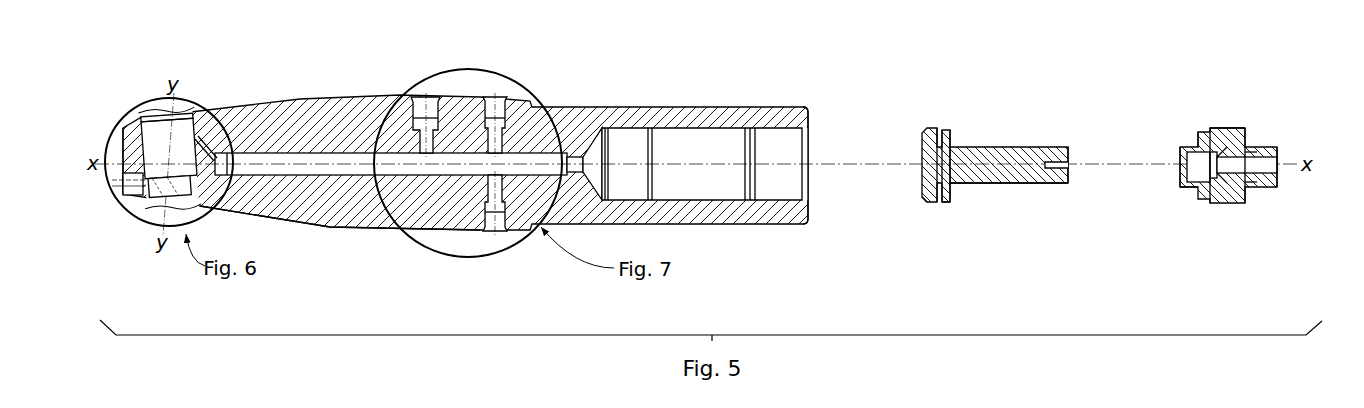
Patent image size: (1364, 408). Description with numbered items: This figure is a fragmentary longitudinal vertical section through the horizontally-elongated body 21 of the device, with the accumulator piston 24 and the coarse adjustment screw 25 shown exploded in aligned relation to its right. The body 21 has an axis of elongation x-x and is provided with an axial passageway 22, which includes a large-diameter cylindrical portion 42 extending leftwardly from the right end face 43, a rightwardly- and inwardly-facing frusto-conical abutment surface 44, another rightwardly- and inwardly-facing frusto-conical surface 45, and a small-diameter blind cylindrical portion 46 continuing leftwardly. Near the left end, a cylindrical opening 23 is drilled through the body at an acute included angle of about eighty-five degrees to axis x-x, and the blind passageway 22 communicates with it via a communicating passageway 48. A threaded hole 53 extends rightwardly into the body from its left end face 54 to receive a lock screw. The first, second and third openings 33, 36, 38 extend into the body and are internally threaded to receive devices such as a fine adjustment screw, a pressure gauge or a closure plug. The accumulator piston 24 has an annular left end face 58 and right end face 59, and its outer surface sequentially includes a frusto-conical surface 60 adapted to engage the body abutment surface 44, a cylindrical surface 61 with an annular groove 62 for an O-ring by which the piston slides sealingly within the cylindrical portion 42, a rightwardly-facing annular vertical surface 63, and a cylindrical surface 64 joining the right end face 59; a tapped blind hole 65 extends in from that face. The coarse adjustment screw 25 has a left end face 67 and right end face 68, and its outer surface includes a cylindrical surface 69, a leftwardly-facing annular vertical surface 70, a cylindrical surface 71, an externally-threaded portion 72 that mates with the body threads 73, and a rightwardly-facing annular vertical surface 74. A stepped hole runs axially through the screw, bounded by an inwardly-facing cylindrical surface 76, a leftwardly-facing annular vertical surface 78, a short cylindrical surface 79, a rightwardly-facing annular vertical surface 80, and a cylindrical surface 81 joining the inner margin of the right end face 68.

The body 21 is at (338, 94).
The axial passageway 22 is at (322, 154).
The cylindrical opening 23 is at (149, 157).
The accumulator piston 24 is at (1011, 124).
The coarse adjustment screw 25 is at (1220, 120).
The first opening 33 is at (436, 102).
The second opening 36 is at (504, 102).
The third opening 38 is at (497, 230).
The large-diameter cylindrical portion 42 is at (684, 196).
The right end face 43 is at (814, 216).
The frusto-conical abutment surface 44 is at (609, 141).
The frusto-conical surface 45 is at (597, 151).
The small-diameter blind cylindrical portion 46 is at (300, 184).
The communicating passageway 48 is at (211, 137).
The threaded hole 53 is at (126, 200).
The left end face 54 is at (124, 137).
The left end face 58 is at (920, 145).
The right end face 59 is at (1074, 148).
The frusto-conical surface 60 is at (925, 201).
The cylindrical surface 61 is at (930, 127).
The annular groove 62 is at (941, 203).
The annular vertical surface 63 is at (956, 147).
The cylindrical surface 64 is at (997, 188).
The tapped blind hole 65 is at (1059, 174).
The left end face 67 is at (1179, 187).
The right end face 68 is at (1286, 184).
The cylindrical surface 69 is at (1188, 193).
The annular vertical surface 70 is at (1195, 137).
The cylindrical surface 71 is at (1207, 126).
The externally-threaded portion 72 is at (1228, 124).
The body threads 73 is at (775, 138).
The annular vertical surface 74 is at (1251, 130).
The inwardly-facing cylindrical surface 76 is at (1182, 155).
The annular vertical surface 78 is at (1200, 175).
The short cylindrical surface 79 is at (1221, 167).
The annular vertical surface 80 is at (1213, 176).
The cylindrical surface 81 is at (1258, 163).